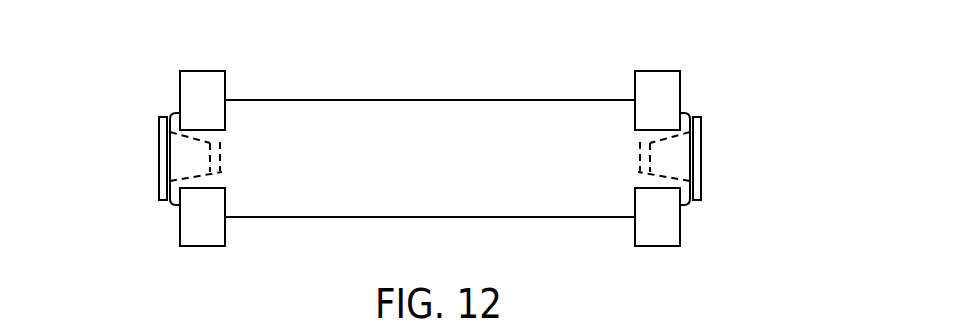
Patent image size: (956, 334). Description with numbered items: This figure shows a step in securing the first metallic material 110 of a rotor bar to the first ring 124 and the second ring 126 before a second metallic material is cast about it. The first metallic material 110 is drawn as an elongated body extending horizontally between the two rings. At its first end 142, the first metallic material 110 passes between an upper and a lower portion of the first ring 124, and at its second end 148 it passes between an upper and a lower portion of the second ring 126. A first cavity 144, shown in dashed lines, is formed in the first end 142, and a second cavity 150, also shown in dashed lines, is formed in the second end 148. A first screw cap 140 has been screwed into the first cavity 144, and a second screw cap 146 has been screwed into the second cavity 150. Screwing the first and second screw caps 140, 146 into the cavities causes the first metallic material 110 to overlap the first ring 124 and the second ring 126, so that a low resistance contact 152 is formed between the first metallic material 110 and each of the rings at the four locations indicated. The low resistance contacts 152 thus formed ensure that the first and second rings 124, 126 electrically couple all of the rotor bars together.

The first metallic material 110 is at (441, 172).
The first ring 124 is at (221, 114).
The second ring 126 is at (676, 114).
The first screw cap 140 is at (158, 160).
The first end 142 is at (127, 97).
The first cavity 144 is at (229, 171).
The second screw cap 146 is at (703, 160).
The second end 148 is at (731, 97).
The second cavity 150 is at (633, 170).
The low resistance contact 152 is at (170, 101).